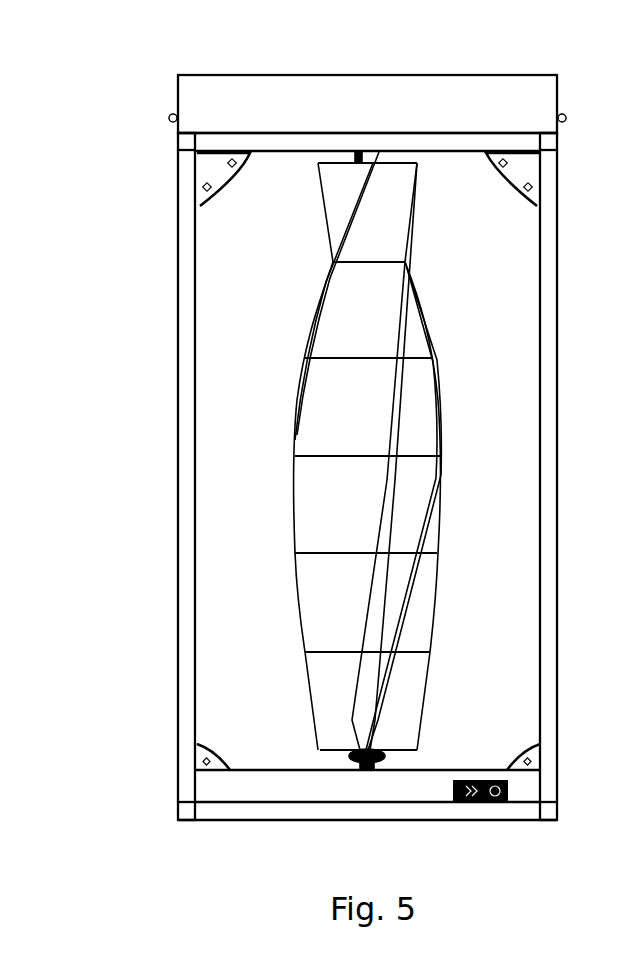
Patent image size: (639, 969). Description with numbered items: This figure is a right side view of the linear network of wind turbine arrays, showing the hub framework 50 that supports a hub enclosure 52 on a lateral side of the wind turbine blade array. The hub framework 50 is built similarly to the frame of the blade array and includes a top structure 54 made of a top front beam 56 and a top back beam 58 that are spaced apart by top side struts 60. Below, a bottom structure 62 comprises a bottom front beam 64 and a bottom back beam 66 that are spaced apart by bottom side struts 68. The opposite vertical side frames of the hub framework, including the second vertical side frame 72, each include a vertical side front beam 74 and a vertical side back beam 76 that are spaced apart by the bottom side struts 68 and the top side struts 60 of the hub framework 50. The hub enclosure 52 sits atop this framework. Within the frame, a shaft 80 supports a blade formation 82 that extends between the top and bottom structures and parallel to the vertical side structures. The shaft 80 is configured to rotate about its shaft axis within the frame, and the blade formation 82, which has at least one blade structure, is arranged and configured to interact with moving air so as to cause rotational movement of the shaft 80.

The hub framework 50 is at (178, 140).
The top structure 54 is at (178, 140).
The top front beam 56 is at (178, 140).
The hub enclosure 52 is at (374, 87).
The top back beam 58 is at (557, 138).
The top side strut 60 is at (415, 148).
The bottom structure 62 is at (184, 820).
The bottom front beam 64 is at (184, 842).
The bottom back beam 66 is at (548, 820).
The bottom side strut 68 is at (368, 820).
The second vertical side frame 72 is at (188, 620).
The vertical side front beam 74 is at (142, 793).
The vertical side back beam 76 is at (557, 627).
The shaft 80 is at (376, 766).
The blade formation 82 is at (300, 605).